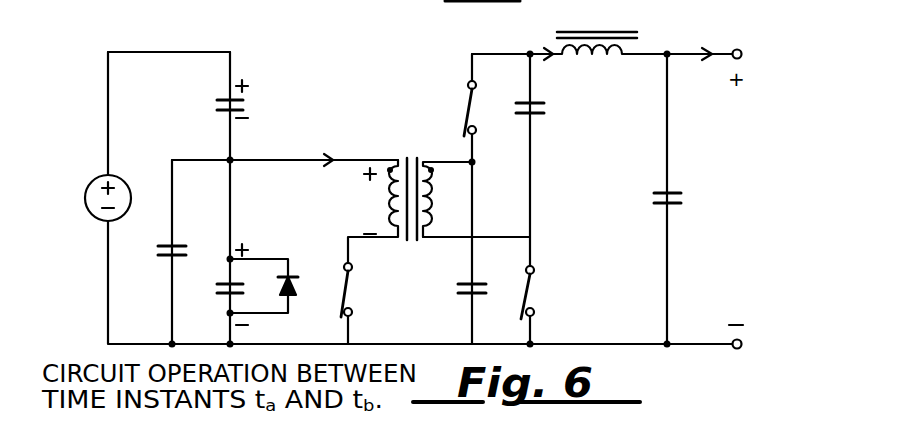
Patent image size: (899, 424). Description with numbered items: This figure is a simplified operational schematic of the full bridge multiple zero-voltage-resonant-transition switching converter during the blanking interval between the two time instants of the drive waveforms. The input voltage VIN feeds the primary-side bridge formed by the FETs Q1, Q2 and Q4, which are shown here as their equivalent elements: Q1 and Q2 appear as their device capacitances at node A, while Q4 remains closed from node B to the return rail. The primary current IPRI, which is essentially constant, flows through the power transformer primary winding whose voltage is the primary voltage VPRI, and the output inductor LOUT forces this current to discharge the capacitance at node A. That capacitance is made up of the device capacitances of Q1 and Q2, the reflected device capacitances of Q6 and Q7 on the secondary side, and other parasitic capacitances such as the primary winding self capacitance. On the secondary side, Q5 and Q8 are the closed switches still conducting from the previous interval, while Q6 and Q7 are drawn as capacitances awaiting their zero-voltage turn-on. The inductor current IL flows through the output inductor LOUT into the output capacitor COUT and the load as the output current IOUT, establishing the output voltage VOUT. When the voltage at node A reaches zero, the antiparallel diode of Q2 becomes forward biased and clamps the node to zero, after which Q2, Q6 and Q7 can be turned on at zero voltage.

The input voltage VIN is at (135, 215).
The transistor Q1 is at (216, 99).
The transistor Q2 is at (241, 284).
The node A is at (239, 146).
The node B is at (328, 239).
The primary current IPRI is at (313, 147).
The primary winding voltage VPRI is at (400, 199).
The transistor Q4 is at (330, 303).
The transistor Q5 is at (452, 108).
The transistor Q6 is at (456, 292).
The transistor Q7 is at (517, 106).
The transistor Q8 is at (514, 292).
The output inductor current IL is at (536, 42).
The output inductor LOUT is at (595, 65).
The output current IOUT is at (696, 42).
The output capacitor COUT is at (643, 212).
The output voltage VOUT is at (734, 184).